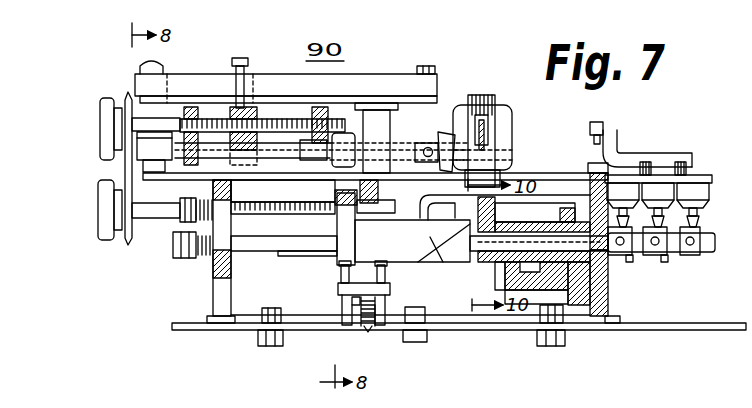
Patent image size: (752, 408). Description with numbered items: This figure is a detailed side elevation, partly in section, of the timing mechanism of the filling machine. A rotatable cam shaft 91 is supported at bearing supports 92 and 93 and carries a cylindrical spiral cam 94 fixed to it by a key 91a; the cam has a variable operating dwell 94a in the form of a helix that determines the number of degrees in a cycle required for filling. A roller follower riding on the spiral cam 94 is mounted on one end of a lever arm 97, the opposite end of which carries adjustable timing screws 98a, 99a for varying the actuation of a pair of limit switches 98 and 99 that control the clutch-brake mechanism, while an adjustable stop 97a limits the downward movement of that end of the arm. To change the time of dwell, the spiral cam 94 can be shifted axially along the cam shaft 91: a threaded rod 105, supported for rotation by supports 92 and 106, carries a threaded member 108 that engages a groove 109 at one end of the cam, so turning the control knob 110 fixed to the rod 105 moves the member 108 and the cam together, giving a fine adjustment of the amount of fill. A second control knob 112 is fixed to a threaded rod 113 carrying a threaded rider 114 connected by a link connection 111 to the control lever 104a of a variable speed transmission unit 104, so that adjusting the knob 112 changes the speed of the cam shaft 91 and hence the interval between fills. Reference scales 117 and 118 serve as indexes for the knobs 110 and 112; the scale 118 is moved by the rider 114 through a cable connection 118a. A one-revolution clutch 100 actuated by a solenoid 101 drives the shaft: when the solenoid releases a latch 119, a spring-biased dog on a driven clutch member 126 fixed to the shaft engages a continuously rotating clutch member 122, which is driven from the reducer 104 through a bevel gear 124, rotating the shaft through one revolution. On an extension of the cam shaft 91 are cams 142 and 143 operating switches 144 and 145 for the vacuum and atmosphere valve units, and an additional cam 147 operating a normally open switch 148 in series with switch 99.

The cam shaft 91 is at (238, 248).
The key 91a is at (315, 250).
The bearing support 92 is at (228, 184).
The bearing support 93 is at (598, 310).
The spiral cam 94 is at (472, 252).
The variable operating dwell 94a is at (443, 262).
The lever arm 97 is at (342, 297).
The adjustable stop 97a is at (366, 320).
The limit switch 98 is at (338, 286).
The timing screw 98a is at (354, 305).
The limit switch 99 is at (340, 268).
The timing screw 99a is at (381, 298).
The one-revolution clutch 100 is at (563, 291).
The solenoid 101 is at (490, 96).
The variable speed transmission unit 104 is at (543, 190).
The control lever 104a is at (455, 168).
The threaded rod 105 is at (157, 210).
The support 106 is at (380, 188).
The threaded member 108 is at (336, 194).
The groove 109 is at (349, 245).
The control knob 110 is at (102, 200).
The link connection 111 is at (400, 150).
The control knob 112 is at (103, 124).
The threaded rod 113 is at (172, 125).
The threaded rider 114 is at (233, 120).
The linear reference scale 117 is at (147, 150).
The reference scale 118 is at (145, 83).
The cable connection 118a is at (390, 78).
The latch 119 is at (484, 133).
The clutch member 122 is at (525, 290).
The bevel gear 124 is at (578, 272).
The driven clutch member 126 is at (507, 253).
The cam 142 is at (650, 257).
The cam 143 is at (692, 257).
The switch 144 is at (660, 182).
The switch 145 is at (695, 182).
The cam 147 is at (613, 257).
The switch 148 is at (627, 182).